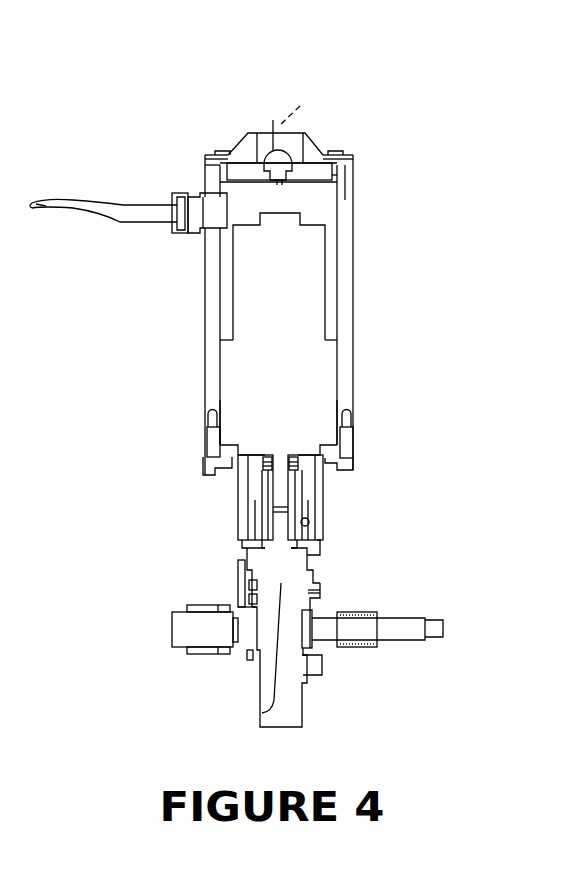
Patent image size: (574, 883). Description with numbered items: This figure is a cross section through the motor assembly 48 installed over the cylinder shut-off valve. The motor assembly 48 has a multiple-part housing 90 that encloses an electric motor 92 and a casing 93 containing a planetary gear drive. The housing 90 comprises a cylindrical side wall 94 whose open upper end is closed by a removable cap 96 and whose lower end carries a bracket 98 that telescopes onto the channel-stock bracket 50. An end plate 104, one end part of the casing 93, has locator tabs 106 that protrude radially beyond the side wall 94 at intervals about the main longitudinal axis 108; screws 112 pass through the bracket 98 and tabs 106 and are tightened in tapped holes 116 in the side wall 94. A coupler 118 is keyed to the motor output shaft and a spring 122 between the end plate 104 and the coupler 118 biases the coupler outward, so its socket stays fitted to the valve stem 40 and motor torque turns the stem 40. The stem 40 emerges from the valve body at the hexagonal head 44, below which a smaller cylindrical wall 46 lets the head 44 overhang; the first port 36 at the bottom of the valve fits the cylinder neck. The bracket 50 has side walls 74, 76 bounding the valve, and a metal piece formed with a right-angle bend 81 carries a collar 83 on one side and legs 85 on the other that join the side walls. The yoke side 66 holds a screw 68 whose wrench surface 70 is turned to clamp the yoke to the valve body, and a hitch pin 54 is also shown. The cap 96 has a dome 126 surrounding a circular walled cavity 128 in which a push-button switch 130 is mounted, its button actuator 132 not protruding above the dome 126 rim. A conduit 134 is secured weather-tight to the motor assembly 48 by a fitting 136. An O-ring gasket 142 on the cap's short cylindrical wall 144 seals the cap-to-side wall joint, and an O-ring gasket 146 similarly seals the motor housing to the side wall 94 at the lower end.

The first port 36 is at (307, 717).
The stem 40 is at (278, 522).
The hexagonal-shaped head 44 is at (322, 552).
The cylindrical wall 46 is at (262, 713).
The motor assembly 48 is at (226, 140).
The bracket 50 is at (231, 507).
The hitch pin 54 is at (309, 518).
The shorter side 66 is at (347, 612).
The screw 68 is at (400, 630).
The wrench surface 70 is at (437, 620).
The side wall 74 is at (328, 536).
The side wall 76 is at (238, 592).
The right-angle bend 81 is at (245, 583).
The collar 83 is at (250, 662).
The legs 85 is at (310, 590).
The housing 90 is at (198, 165).
The electric motor 92 is at (310, 238).
The casing 93 is at (313, 367).
The cylindrical side wall 94 is at (345, 270).
The cap 96 is at (205, 155).
The bracket 98 is at (205, 450).
The end plate 104 is at (335, 438).
The locator tabs 106 is at (207, 432).
The main longitudinal axis 108 is at (300, 106).
The screws 112 is at (203, 463).
The tapped holes 116 is at (210, 412).
The coupler 118 is at (298, 470).
The spring 122 is at (265, 460).
The dome 126 is at (246, 133).
The circular walled cavity 128 is at (297, 133).
The push-button switch 130 is at (272, 170).
The button actuator 132 is at (273, 120).
The conduit 134 is at (128, 218).
The fitting 136 is at (200, 232).
The O-ring gasket 142 is at (340, 172).
The short cylindrical wall 144 is at (318, 178).
The O-ring gasket 146 is at (217, 424).